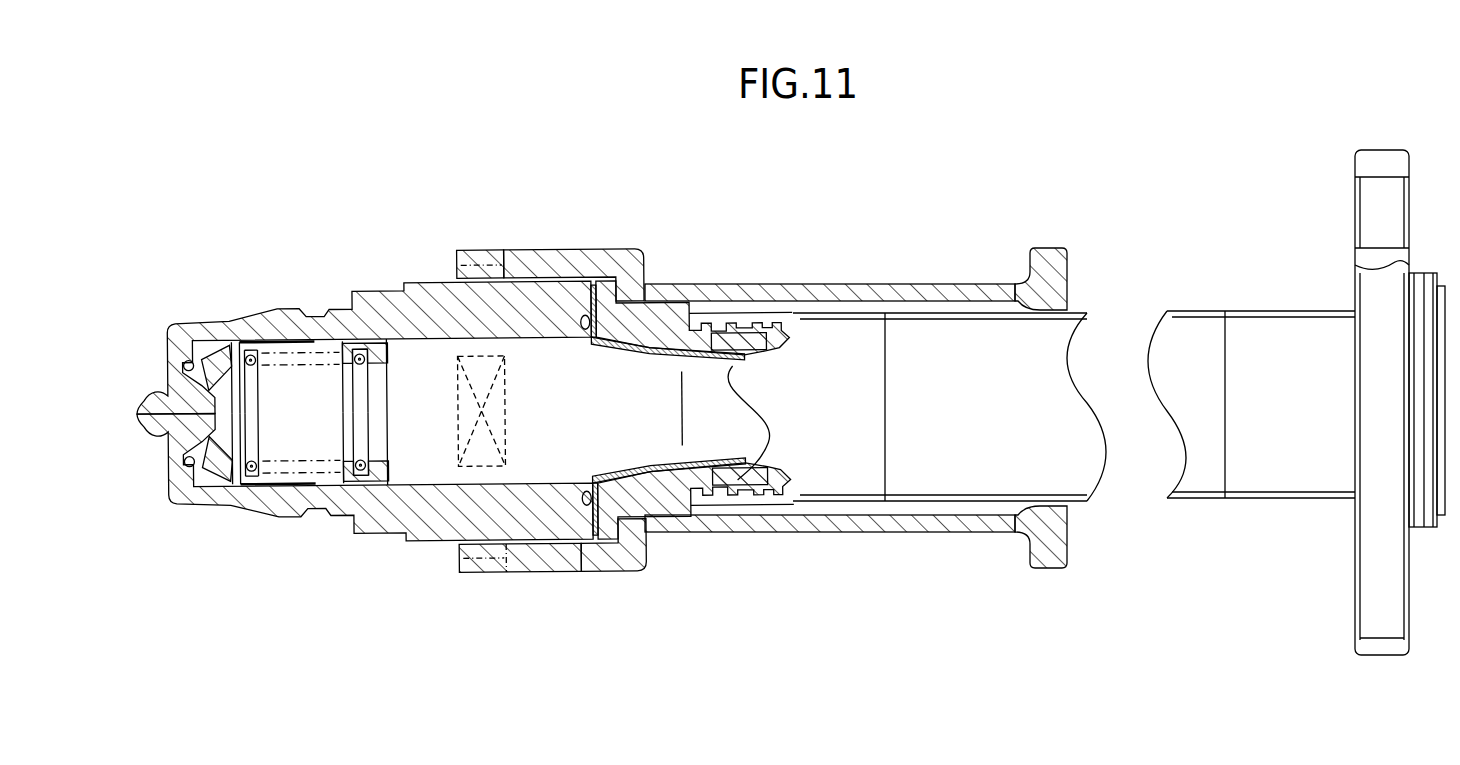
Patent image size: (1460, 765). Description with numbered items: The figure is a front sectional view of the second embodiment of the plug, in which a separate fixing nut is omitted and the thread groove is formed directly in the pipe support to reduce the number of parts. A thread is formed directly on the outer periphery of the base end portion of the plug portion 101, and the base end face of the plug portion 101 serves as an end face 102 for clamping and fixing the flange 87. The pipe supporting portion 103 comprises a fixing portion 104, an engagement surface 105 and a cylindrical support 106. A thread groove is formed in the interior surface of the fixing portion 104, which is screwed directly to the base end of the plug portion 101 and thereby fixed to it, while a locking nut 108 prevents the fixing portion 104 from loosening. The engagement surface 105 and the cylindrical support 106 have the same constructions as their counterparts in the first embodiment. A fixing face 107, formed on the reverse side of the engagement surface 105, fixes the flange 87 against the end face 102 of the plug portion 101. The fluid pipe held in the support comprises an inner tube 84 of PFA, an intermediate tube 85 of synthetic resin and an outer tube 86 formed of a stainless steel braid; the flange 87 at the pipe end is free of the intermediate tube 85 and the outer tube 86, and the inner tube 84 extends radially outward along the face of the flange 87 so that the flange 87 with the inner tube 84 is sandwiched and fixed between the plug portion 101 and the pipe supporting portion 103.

The inner tube 84 is at (626, 356).
The intermediate tube 85 is at (752, 492).
The outer tube 86 is at (992, 340).
The flange 87 is at (576, 572).
The plug portion 101 is at (432, 300).
The end face 102 is at (647, 563).
The pipe supporting portion 103 is at (879, 255).
The fixing portion 104 is at (556, 250).
The engagement surface 105 is at (647, 265).
The cylindrical support 106 is at (808, 284).
The fixing face 107 is at (598, 538).
The locking nut 108 is at (485, 252).